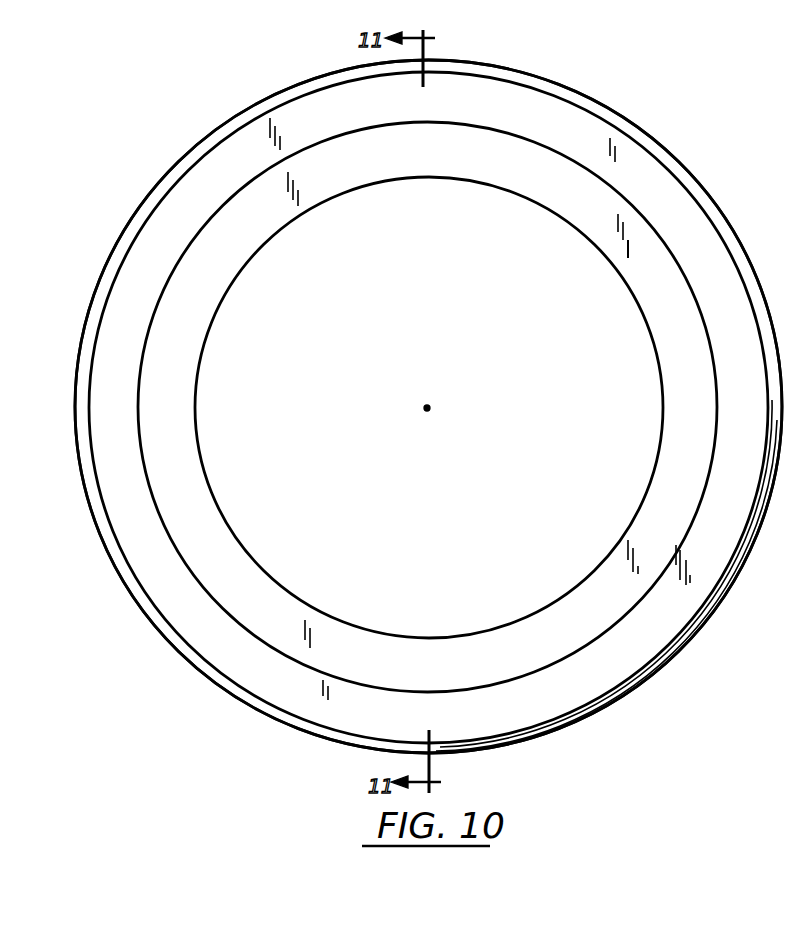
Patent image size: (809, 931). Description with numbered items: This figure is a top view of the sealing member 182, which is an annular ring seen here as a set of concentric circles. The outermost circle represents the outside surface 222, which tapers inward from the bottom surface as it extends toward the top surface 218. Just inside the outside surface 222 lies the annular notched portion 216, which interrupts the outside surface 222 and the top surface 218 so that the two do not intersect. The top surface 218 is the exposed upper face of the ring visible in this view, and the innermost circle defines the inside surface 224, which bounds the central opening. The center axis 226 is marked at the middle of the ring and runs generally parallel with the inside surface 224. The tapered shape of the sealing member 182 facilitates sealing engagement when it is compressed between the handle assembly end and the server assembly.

The sealing member 182 is at (263, 98).
The annular notched portion 216 is at (534, 141).
The top surface 218 is at (628, 250).
The outside surface 222 is at (636, 132).
The inside surface 224 is at (473, 181).
The center axis 226 is at (430, 406).